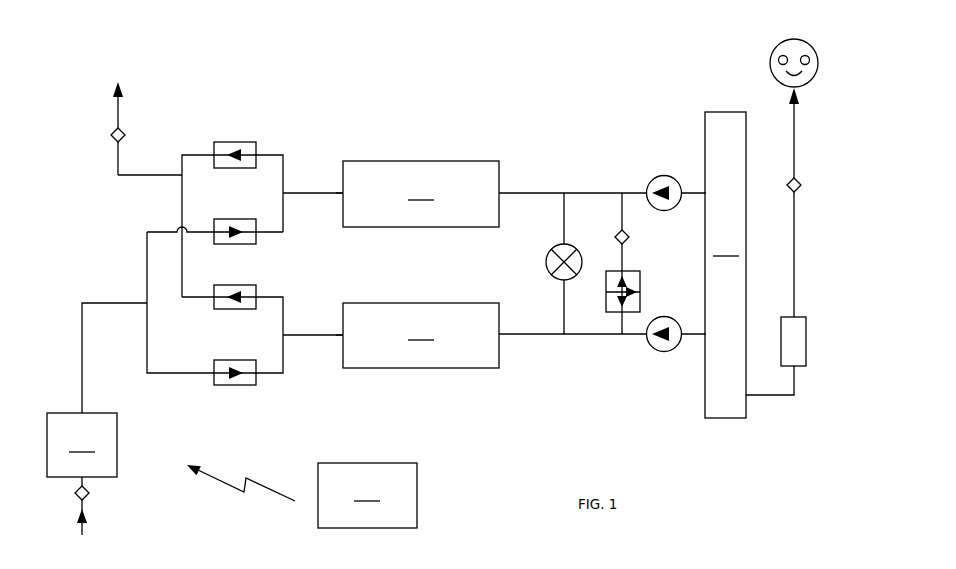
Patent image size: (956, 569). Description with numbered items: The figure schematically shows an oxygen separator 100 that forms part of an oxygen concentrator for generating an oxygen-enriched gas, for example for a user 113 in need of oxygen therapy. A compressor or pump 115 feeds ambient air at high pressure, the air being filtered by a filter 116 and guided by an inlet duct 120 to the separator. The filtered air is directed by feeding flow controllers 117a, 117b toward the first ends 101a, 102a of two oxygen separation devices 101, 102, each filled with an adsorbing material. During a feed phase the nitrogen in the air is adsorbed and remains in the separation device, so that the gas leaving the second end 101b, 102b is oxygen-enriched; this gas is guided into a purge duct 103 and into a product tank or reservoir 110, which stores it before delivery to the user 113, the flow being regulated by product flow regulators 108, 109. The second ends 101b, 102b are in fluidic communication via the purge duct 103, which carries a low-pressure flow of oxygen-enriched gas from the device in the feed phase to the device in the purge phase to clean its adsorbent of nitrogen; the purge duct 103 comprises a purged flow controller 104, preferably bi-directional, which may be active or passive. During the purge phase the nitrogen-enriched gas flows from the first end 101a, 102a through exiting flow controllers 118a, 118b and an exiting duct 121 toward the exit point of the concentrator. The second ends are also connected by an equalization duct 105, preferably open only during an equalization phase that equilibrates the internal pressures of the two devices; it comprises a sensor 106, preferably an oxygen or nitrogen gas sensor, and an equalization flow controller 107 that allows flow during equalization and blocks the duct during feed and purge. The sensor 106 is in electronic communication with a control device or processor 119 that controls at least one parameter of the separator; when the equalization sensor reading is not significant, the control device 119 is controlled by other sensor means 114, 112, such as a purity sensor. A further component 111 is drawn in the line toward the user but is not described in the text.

The oxygen separator 100 is at (70, 78).
The oxygen separation device 101 is at (421, 194).
The first end of oxygen separation device 101a is at (343, 190).
The second end of oxygen separation device 101b is at (499, 190).
The oxygen separation device 102 is at (421, 335).
The first end of oxygen separation device 102a is at (343, 331).
The second end of oxygen separation device 102b is at (499, 331).
The purge duct 103 is at (564, 221).
The purged flow controller 104 is at (549, 259).
The equalization duct 105 is at (622, 330).
The sensor 106 is at (629, 237).
The equalization flow controller 107 is at (640, 283).
The product flow regulator 108 is at (652, 181).
The product flow regulator 109 is at (652, 347).
The product tank or reservoir 110 is at (725, 265).
The filter 111 is at (806, 343).
The sensor means 112 is at (801, 185).
The user 113 is at (771, 65).
The sensor means 114 is at (111, 135).
The compressor or pump 115 is at (82, 445).
The filter 116 is at (75, 493).
The feeding flow controller 117a is at (240, 219).
The feeding flow controller 117b is at (240, 360).
The exiting flow controller 118a is at (240, 142).
The exiting flow controller 118b is at (240, 285).
The control device or processor 119 is at (302, 495).
The inlet duct 120 is at (82, 341).
The exiting duct 121 is at (118, 173).